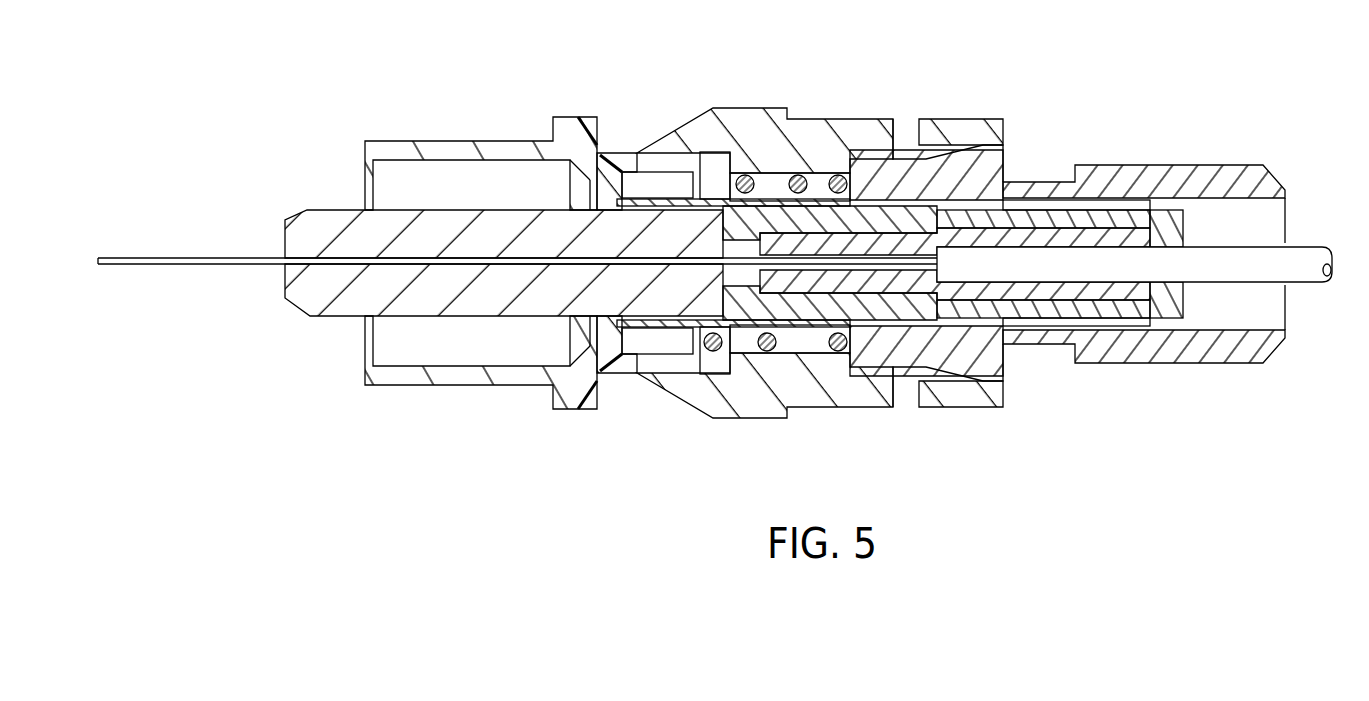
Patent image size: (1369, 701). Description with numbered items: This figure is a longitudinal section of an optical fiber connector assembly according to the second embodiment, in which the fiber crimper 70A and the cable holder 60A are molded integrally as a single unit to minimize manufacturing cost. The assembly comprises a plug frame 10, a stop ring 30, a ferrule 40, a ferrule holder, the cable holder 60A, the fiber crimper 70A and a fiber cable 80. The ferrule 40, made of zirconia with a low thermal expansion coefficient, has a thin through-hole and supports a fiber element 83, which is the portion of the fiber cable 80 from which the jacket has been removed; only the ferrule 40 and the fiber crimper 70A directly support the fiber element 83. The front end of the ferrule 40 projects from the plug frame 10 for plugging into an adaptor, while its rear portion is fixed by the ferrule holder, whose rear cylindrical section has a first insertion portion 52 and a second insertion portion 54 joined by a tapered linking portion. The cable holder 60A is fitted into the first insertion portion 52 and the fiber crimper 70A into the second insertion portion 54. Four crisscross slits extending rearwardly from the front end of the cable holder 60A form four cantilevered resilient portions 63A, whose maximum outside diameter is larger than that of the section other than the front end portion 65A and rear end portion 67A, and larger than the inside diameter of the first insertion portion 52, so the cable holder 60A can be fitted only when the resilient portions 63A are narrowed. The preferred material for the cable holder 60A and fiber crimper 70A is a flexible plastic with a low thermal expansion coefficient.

The plug frame 10 is at (497, 150).
The stop ring 30 is at (1262, 190).
The ferrule 40 is at (337, 227).
The first insertion portion 52 is at (1063, 320).
The second insertion portion 54 is at (818, 240).
The cable holder 60A is at (1042, 233).
The resilient portions 63A is at (1030, 297).
The front end portion 65A is at (977, 290).
The rear end portion 67A is at (1163, 307).
The fiber crimper 70A is at (878, 197).
The fiber cable 80 is at (1305, 287).
The fiber element 83 is at (337, 268).